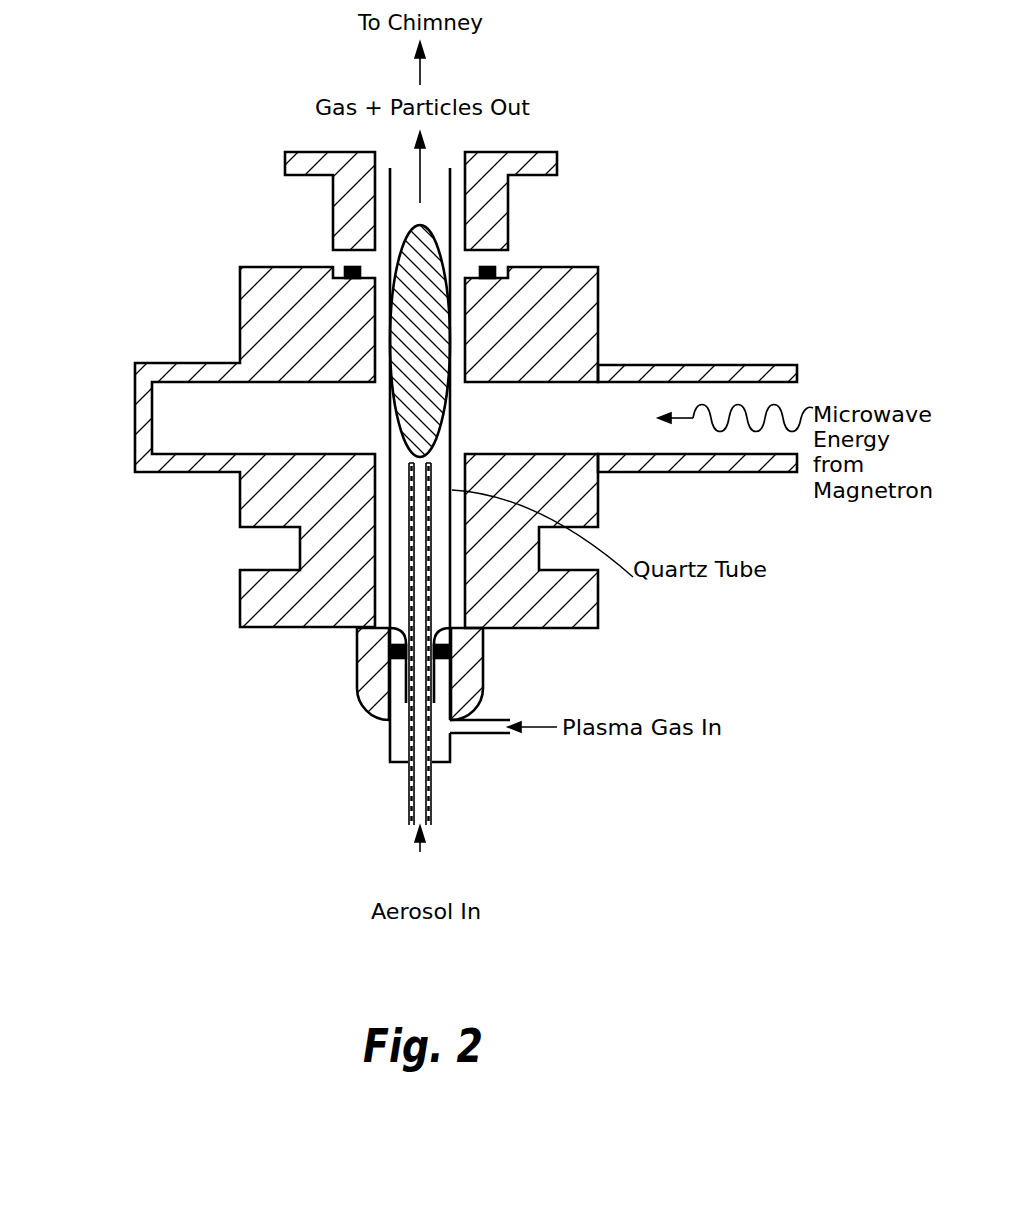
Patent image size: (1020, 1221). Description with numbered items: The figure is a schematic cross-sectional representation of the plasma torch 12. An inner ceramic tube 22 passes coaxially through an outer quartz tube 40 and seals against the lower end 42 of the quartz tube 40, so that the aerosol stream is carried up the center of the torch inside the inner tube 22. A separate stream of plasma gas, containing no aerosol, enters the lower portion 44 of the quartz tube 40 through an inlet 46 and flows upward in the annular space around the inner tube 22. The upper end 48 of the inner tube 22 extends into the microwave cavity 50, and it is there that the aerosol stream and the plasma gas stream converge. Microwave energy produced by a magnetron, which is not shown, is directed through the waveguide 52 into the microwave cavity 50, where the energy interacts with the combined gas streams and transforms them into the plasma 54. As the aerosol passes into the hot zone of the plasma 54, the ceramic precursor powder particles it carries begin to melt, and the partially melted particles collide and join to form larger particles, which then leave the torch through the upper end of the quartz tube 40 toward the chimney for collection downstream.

The plasma torch 12 is at (210, 124).
The inner ceramic tube 22 is at (433, 800).
The outer quartz tube 40 is at (390, 725).
The lower end 42 is at (398, 763).
The lower portion 44 is at (450, 752).
The inlet 46 is at (497, 720).
The upper end 48 is at (390, 452).
The microwave cavity 50 is at (412, 403).
The waveguide 52 is at (626, 353).
The plasma 54 is at (422, 340).